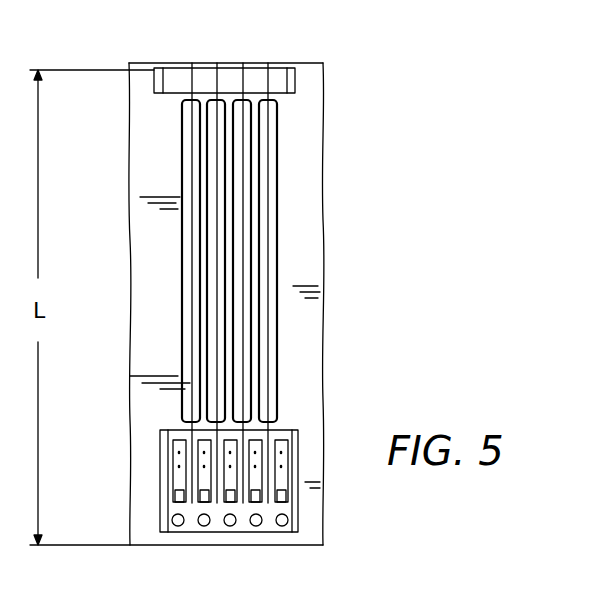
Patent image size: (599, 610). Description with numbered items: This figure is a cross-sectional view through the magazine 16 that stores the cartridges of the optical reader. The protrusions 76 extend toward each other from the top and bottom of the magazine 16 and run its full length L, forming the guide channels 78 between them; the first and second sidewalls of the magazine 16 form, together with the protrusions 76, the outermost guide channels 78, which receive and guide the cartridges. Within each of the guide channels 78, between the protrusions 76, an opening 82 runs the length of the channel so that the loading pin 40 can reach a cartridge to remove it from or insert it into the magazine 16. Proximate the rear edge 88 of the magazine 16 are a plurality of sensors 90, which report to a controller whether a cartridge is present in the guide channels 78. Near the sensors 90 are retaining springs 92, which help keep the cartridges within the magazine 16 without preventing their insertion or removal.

The magazine 16 is at (159, 314).
The protrusions 76 is at (268, 66).
The guide channels 78 is at (200, 94).
The openings 82 is at (218, 252).
The loading pin 40 is at (236, 341).
The rear edge 88 is at (160, 517).
The retaining springs 92 is at (183, 443).
The sensors 90 is at (204, 526).